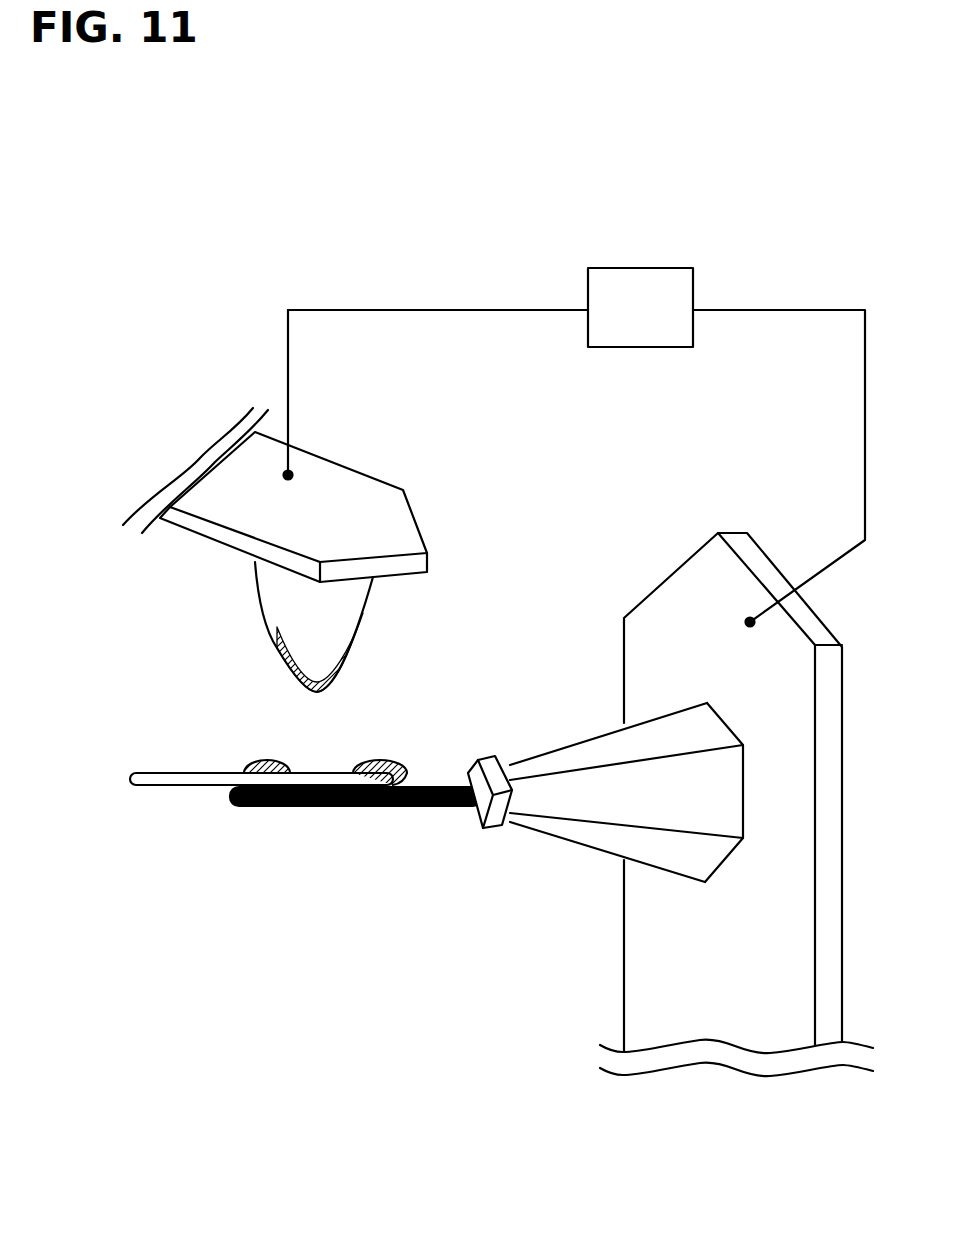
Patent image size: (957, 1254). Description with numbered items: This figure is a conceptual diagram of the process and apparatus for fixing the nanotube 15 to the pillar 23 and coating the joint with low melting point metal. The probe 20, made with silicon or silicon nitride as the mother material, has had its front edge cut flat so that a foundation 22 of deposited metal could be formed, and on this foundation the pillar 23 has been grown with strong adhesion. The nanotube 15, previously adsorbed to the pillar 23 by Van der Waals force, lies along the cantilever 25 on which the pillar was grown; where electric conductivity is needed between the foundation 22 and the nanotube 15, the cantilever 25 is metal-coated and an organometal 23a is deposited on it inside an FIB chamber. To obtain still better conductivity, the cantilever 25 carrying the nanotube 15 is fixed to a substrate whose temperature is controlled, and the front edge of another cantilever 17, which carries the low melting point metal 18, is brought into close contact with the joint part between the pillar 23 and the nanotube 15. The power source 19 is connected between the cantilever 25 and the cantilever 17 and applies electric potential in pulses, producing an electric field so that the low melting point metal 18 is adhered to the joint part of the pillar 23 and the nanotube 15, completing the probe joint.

The nanotube 15 is at (165, 772).
The cantilever 17 is at (367, 490).
The low melting point metal 18 is at (287, 670).
The power source 19 is at (642, 348).
The probe 20 is at (587, 833).
The foundation 22 is at (495, 823).
The pillar 23 is at (272, 807).
The organometal 23a is at (382, 762).
The cantilever 25 is at (648, 632).